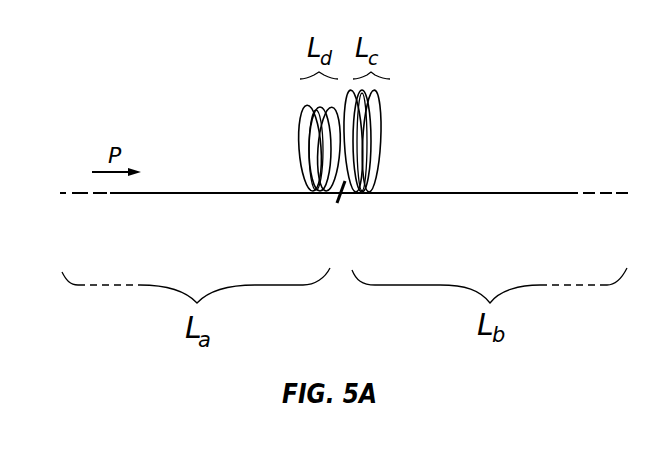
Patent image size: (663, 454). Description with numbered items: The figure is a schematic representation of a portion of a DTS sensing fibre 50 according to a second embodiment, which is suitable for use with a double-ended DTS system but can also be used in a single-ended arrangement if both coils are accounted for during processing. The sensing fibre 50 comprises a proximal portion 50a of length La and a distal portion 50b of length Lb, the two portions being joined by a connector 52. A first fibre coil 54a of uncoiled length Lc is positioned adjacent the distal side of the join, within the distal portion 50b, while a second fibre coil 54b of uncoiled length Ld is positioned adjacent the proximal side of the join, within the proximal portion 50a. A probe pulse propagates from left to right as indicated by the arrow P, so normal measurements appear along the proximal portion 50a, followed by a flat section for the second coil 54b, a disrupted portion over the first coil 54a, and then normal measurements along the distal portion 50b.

The sensing fibre 50 is at (452, 74).
The proximal portion 50a is at (167, 194).
The distal portion 50b is at (503, 194).
The connector 52 is at (337, 203).
The first fibre coil 54a is at (378, 140).
The second fibre coil 54b is at (302, 150).